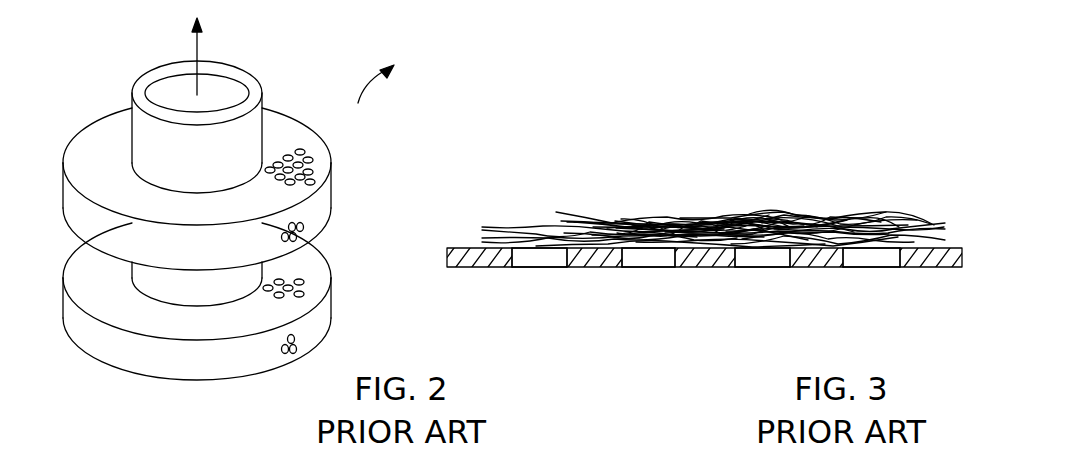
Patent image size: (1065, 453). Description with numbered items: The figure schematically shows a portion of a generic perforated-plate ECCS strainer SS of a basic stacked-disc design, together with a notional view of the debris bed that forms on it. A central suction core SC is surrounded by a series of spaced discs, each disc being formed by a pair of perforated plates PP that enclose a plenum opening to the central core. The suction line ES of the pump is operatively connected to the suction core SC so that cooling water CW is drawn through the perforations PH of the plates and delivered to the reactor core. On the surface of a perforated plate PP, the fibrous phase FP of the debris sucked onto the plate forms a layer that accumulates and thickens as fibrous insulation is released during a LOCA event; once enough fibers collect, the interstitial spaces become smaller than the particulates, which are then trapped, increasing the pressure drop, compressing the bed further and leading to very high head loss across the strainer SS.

In FIG. 2, the perforated plates PP is at (320, 157).
In FIG. 3, the perforated plates PP is at (487, 257).
In FIG. 2, the perforations PH is at (312, 172).
In FIG. 3, the perforations PH is at (556, 257).
In FIG. 2, the central suction core SC is at (235, 183).
In FIG. 2, the suction line ES is at (264, 82).
In FIG. 2, the cooling water CW is at (222, 55).
In FIG. 2, the ECCS strainer SS is at (391, 80).
In FIG. 3, the fibrous phase FP is at (893, 222).